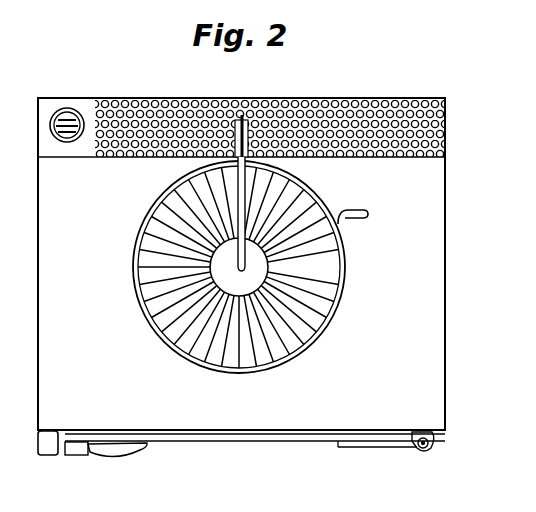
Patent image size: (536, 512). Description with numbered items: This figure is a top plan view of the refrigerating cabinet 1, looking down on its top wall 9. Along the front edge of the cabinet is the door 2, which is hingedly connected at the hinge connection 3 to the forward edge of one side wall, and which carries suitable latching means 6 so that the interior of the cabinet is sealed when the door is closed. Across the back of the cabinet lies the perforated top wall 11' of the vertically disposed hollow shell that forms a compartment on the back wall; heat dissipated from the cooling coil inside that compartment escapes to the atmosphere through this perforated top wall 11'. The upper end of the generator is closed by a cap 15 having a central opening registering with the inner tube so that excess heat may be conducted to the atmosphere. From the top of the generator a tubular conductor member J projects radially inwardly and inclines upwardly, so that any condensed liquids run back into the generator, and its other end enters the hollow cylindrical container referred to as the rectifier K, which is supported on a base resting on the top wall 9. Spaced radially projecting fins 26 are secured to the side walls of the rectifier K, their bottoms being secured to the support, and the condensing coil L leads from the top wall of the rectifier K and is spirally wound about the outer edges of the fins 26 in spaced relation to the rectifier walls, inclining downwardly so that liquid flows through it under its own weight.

The refrigerating cabinet 1 is at (447, 346).
The door 2 is at (298, 441).
The hinge connection 3 is at (436, 445).
The latching means 6 is at (76, 456).
The top wall 9 is at (434, 265).
The perforated top wall 11' is at (270, 109).
The cap 15 is at (70, 117).
The fins 26 is at (334, 256).
The tubular conductor member J is at (245, 118).
The rectifier K is at (217, 273).
The condensing coil L is at (308, 196).